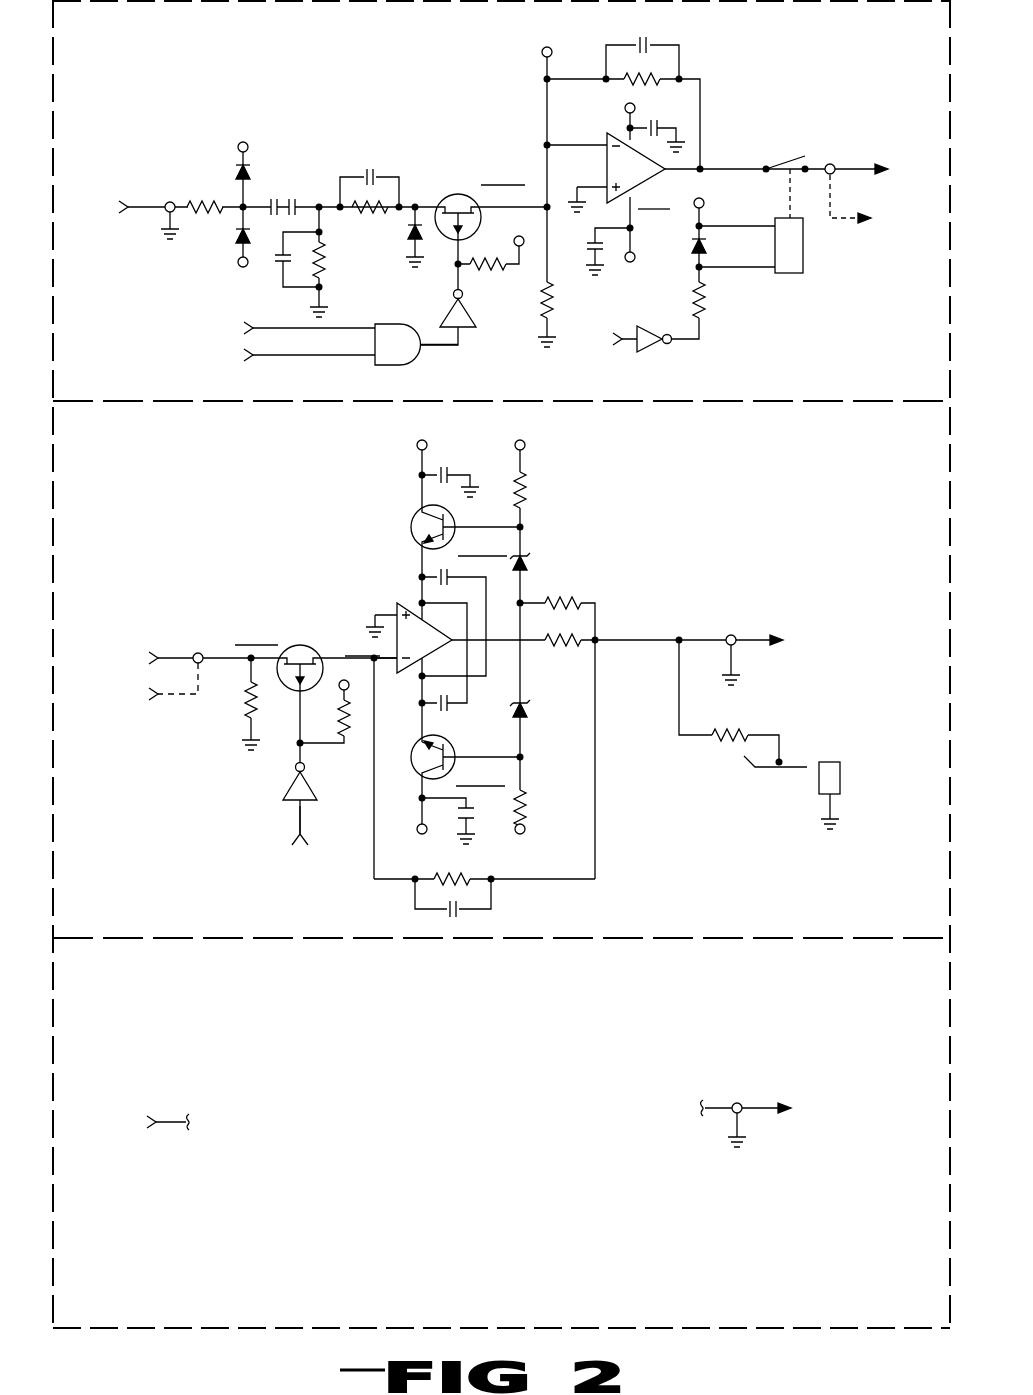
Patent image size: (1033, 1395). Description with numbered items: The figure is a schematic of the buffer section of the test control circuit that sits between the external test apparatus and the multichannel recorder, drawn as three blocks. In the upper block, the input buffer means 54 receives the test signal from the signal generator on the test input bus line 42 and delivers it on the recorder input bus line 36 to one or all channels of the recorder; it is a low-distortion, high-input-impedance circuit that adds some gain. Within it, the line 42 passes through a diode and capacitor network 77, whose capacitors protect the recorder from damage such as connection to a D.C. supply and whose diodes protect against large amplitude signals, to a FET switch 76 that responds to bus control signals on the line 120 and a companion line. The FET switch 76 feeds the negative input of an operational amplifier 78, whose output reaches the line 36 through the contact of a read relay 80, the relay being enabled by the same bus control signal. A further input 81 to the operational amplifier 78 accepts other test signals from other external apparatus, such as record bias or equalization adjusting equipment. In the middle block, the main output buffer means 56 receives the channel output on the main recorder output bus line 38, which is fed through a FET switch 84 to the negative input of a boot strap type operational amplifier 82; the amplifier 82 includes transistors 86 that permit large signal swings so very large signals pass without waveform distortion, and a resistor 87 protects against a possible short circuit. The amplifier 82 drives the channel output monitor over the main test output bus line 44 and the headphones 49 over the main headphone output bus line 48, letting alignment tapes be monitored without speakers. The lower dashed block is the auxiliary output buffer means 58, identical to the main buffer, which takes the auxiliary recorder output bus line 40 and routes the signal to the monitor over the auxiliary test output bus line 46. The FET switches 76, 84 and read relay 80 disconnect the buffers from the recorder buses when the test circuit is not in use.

The recorder input bus line 36 is at (852, 165).
The main recorder output bus line 38 is at (173, 655).
The auxiliary recorder output bus line 40 is at (172, 1120).
The test input bus line 42 is at (150, 205).
The main test output bus line 44 is at (751, 637).
The auxiliary test output bus line 46 is at (755, 1105).
The main headphone output bus line 48 is at (679, 688).
The headphones 49 is at (795, 753).
The input buffer means 54 is at (882, 387).
The main output buffer means 56 is at (886, 924).
The auxiliary output buffer means 58 is at (900, 1304).
The FET switch 76 is at (455, 200).
The diode and capacitor network 77 is at (278, 190).
The operational amplifier 78 is at (624, 133).
The read relay 80 is at (806, 203).
The input to the operational amplifier 81 is at (541, 56).
The boot strap type operational amplifier 82 is at (408, 600).
The FET switch 84 is at (306, 650).
The transistors 86 is at (418, 518).
The resistor 87 is at (562, 652).
The line 120 is at (260, 328).